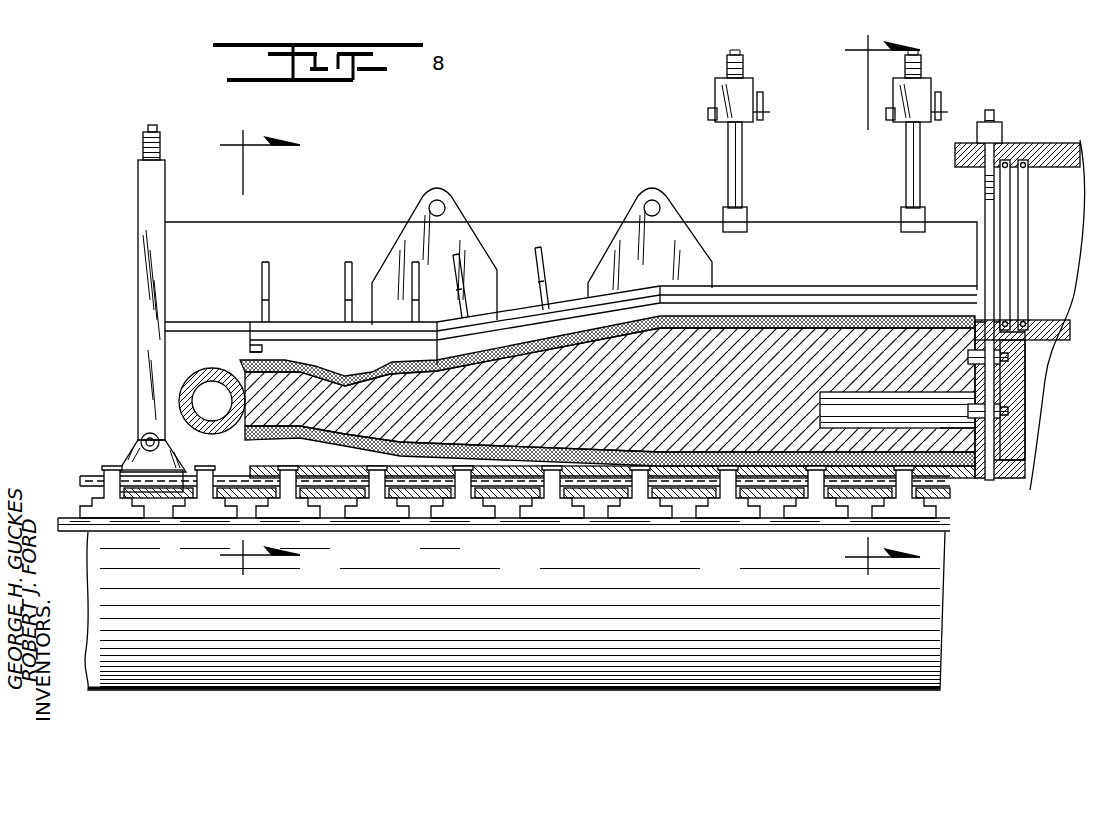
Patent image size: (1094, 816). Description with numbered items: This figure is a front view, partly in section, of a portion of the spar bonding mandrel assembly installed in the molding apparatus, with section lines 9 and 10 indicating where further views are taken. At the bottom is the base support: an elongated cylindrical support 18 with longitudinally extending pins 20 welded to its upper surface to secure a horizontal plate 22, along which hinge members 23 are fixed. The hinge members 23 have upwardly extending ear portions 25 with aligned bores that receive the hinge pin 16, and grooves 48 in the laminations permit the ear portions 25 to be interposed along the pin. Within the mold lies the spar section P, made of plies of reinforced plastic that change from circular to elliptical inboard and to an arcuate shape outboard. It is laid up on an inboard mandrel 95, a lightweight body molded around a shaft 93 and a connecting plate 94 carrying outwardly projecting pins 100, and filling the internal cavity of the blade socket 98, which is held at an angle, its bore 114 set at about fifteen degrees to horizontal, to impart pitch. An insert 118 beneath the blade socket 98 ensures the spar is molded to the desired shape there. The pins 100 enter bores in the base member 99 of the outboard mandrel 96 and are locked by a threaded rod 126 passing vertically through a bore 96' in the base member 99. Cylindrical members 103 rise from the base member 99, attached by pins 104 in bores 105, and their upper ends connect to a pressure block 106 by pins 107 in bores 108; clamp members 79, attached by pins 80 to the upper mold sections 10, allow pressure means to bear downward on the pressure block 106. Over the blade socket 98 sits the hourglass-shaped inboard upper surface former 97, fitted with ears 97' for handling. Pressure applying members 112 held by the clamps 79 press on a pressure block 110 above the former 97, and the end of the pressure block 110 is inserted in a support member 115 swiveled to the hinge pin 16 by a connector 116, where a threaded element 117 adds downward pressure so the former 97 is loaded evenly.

The section line 9- 9 is at (260, 352).
The upper mold section 10 is at (879, 306).
The hinge pin 16 is at (90, 478).
The elongated cylindrical support 18 is at (930, 634).
The pins 20 is at (85, 531).
The horizontal plate 22 is at (162, 531).
The hinge members 23 is at (372, 508).
The ear portions 25 is at (108, 492).
The grooves 48 is at (812, 500).
The clamp members 79 is at (755, 85).
The pins 80 is at (770, 112).
The shaft 93 is at (945, 432).
The connecting plate 94 is at (1000, 388).
The inboard mandrel 95 is at (780, 345).
The outboard mandrel 96 is at (1019, 412).
The vertical bore 96' is at (1025, 493).
The inboard upper surface former 97 is at (235, 338).
The ears 97' is at (543, 246).
The blade socket 98 is at (226, 372).
The base member 99 is at (1012, 432).
The pins 100 is at (1008, 360).
The cylindrical members 103 is at (1028, 240).
The pins 104 is at (1006, 320).
The bores 105 is at (1025, 328).
The pressure block 106 is at (1035, 160).
The pins 107 is at (1012, 168).
The bores 108 is at (1028, 185).
The pressure block 110 is at (342, 222).
The pressure applying members 112 is at (742, 185).
The bore 114 is at (192, 400).
The support member 115 is at (140, 355).
The connector 116 is at (140, 460).
The threaded element 117 is at (143, 140).
The insert 118 is at (250, 467).
The threaded rod 126 is at (992, 130).
The spar section P is at (345, 372).